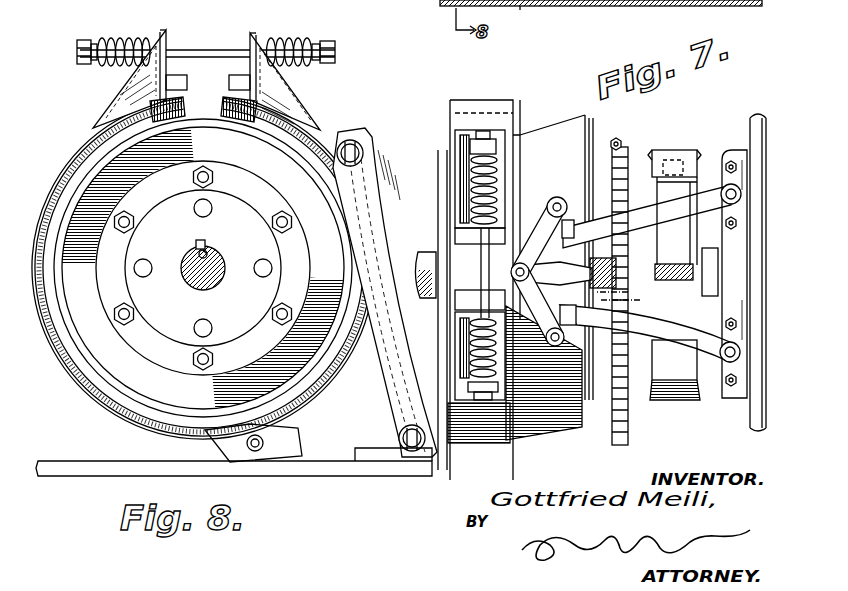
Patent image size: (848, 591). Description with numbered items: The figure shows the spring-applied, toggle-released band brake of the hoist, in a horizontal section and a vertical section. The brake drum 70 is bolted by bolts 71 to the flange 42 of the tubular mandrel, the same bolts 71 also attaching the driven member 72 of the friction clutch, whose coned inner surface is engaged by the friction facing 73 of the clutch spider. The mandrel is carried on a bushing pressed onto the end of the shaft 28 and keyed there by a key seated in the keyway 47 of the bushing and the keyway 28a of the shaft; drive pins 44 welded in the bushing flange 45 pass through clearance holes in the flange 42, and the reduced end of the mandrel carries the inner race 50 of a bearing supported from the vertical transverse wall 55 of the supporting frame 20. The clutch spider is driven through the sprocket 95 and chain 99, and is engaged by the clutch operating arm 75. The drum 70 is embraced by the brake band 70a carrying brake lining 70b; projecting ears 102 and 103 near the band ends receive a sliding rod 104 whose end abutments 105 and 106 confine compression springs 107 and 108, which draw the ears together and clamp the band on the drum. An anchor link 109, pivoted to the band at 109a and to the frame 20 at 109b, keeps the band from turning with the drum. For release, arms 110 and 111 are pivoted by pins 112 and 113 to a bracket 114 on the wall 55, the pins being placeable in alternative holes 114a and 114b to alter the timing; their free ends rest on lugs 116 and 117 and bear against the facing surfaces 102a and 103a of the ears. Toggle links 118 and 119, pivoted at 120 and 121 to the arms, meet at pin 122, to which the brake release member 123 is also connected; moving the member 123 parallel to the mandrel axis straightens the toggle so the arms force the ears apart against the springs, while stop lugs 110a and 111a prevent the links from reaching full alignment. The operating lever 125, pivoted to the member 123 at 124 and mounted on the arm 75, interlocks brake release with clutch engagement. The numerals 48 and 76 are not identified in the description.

In FIG. 8, the supporting frame 20 is at (300, 478).
In FIG. 7, the supporting frame 20 is at (668, 8).
In FIG. 8, the shaft 28 is at (192, 286).
In FIG. 7, the shaft 28 is at (428, 254).
In FIG. 8, the keyway in the shaft 28a is at (209, 254).
In FIG. 8, the flange of the mandrel 42 is at (272, 200).
In FIG. 8, the drive pins 44 is at (146, 278).
In FIG. 8, the flange of the bushing 45 is at (278, 249).
In FIG. 7, the flange of the bushing 45 is at (438, 188).
In FIG. 8, the keyway in the bushing 47 is at (204, 240).
In FIG. 8, the key pin 48 is at (210, 250).
In FIG. 7, the inner race 50 is at (716, 253).
In FIG. 7, the vertical transverse wall 55 is at (766, 239).
In FIG. 8, the brake drum 70 is at (94, 160).
In FIG. 7, the brake drum 70 is at (518, 113).
In FIG. 8, the brake band 70a is at (88, 146).
In FIG. 7, the brake band 70a is at (452, 8).
In FIG. 8, the brake lining 70b is at (66, 184).
In FIG. 7, the brake lining 70b is at (497, 8).
In FIG. 8, the bolts 71 is at (205, 166).
In FIG. 7, the driven member of the clutch 72 is at (546, 127).
In FIG. 7, the friction facing 73 is at (590, 128).
In FIG. 7, the clutch operating arm 75 is at (670, 266).
In FIG. 7, the block 76 is at (678, 150).
In FIG. 7, the sprocket 95 is at (610, 142).
In FIG. 7, the chain 99 is at (622, 146).
In FIG. 8, the projecting ear 102 is at (290, 98).
In FIG. 7, the projecting ear 102 is at (456, 360).
In FIG. 8, the facing surface of ear 102 102a is at (249, 36).
In FIG. 8, the projecting ear 103 is at (132, 90).
In FIG. 7, the projecting ear 103 is at (455, 205).
In FIG. 8, the facing surface of ear 103 103a is at (172, 24).
In FIG. 8, the rod 104 is at (206, 50).
In FIG. 7, the rod 104 is at (492, 266).
In FIG. 8, the abutment 105 is at (82, 40).
In FIG. 7, the abutment 105 is at (474, 138).
In FIG. 8, the abutment 106 is at (333, 44).
In FIG. 7, the abutment 106 is at (494, 400).
In FIG. 8, the compression spring 107 is at (104, 40).
In FIG. 7, the compression spring 107 is at (470, 175).
In FIG. 8, the compression spring 108 is at (268, 40).
In FIG. 7, the compression spring 108 is at (498, 336).
In FIG. 8, the anchor link 109 is at (392, 399).
In FIG. 8, the pivotal connection of anchor link to band 109a is at (364, 152).
In FIG. 8, the pivotal connection of anchor link to frame 109b is at (408, 452).
In FIG. 8, the arm 110 is at (238, 78).
In FIG. 7, the arm 110 is at (706, 366).
In FIG. 7, the lug 110a is at (572, 430).
In FIG. 8, the arm 111 is at (180, 78).
In FIG. 7, the arm 111 is at (714, 190).
In FIG. 7, the lug 111a is at (650, 148).
In FIG. 7, the pivot pin 112 is at (741, 353).
In FIG. 7, the pivot pin 113 is at (742, 194).
In FIG. 7, the bracket 114 is at (756, 274).
In FIG. 7, the holes 114a is at (738, 324).
In FIG. 7, the holes 114b is at (738, 166).
In FIG. 8, the lug 116 is at (221, 101).
In FIG. 7, the lug 116 is at (480, 292).
In FIG. 8, the lug 117 is at (186, 96).
In FIG. 7, the lug 117 is at (462, 246).
In FIG. 7, the toggle link 118 is at (547, 303).
In FIG. 7, the toggle link 119 is at (548, 213).
In FIG. 7, the pivot 120 is at (552, 348).
In FIG. 7, the pivot 121 is at (570, 188).
In FIG. 7, the pin 122 is at (515, 279).
In FIG. 7, the brake release member 123 is at (551, 267).
In FIG. 7, the pivotal joint of lever to release member 124 is at (640, 296).
In FIG. 7, the operating lever 125 is at (604, 234).